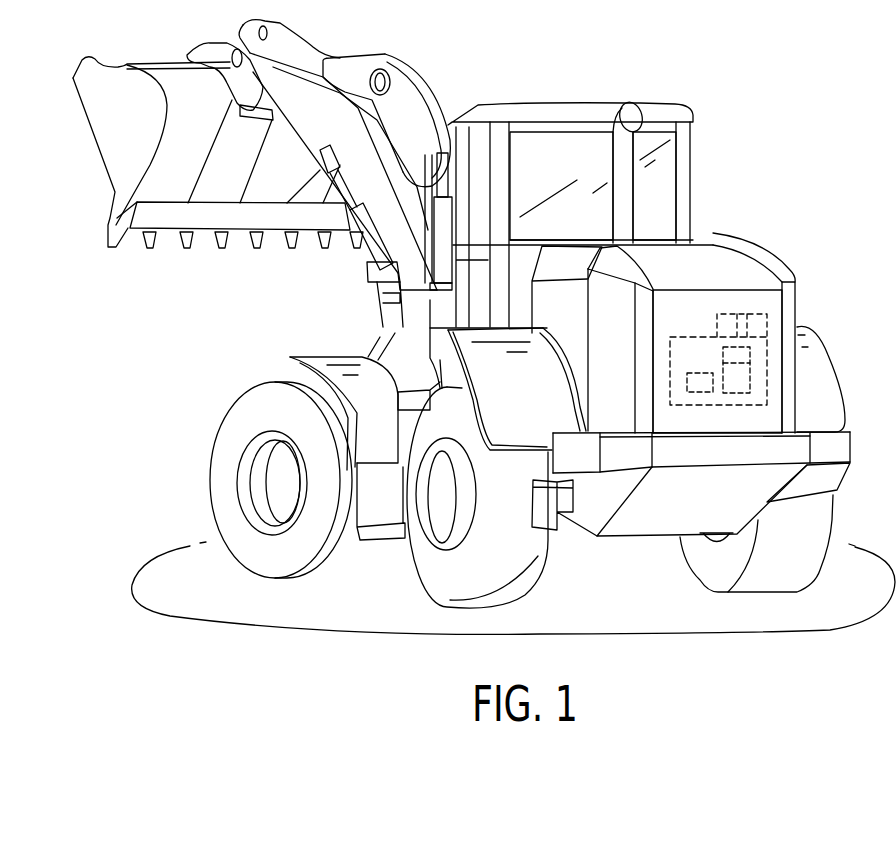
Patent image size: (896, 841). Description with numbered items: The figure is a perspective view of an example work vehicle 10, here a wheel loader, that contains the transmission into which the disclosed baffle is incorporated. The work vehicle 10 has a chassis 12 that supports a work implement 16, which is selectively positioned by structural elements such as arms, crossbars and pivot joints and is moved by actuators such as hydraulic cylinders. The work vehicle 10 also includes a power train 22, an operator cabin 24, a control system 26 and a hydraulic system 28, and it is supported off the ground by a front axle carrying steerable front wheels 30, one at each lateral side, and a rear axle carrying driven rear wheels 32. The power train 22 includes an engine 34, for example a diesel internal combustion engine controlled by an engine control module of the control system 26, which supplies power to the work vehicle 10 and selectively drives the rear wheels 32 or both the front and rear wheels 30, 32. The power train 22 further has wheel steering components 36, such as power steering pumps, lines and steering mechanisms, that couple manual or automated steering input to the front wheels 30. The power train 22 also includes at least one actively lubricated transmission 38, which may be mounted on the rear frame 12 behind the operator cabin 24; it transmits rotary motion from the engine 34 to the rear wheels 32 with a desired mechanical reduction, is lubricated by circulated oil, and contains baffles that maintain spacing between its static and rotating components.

The work vehicle 10 is at (794, 164).
The chassis 12 is at (337, 573).
The work implement 16 is at (98, 117).
The power train 22 is at (663, 353).
The operator cabin 24 is at (660, 103).
The control system 26 is at (777, 300).
The hydraulic system 28 is at (723, 310).
The front wheels 30 is at (437, 553).
The rear wheels 32 is at (253, 520).
The engine 34 is at (733, 393).
The wheel steering components 36 is at (707, 360).
The transmission 38 is at (668, 376).